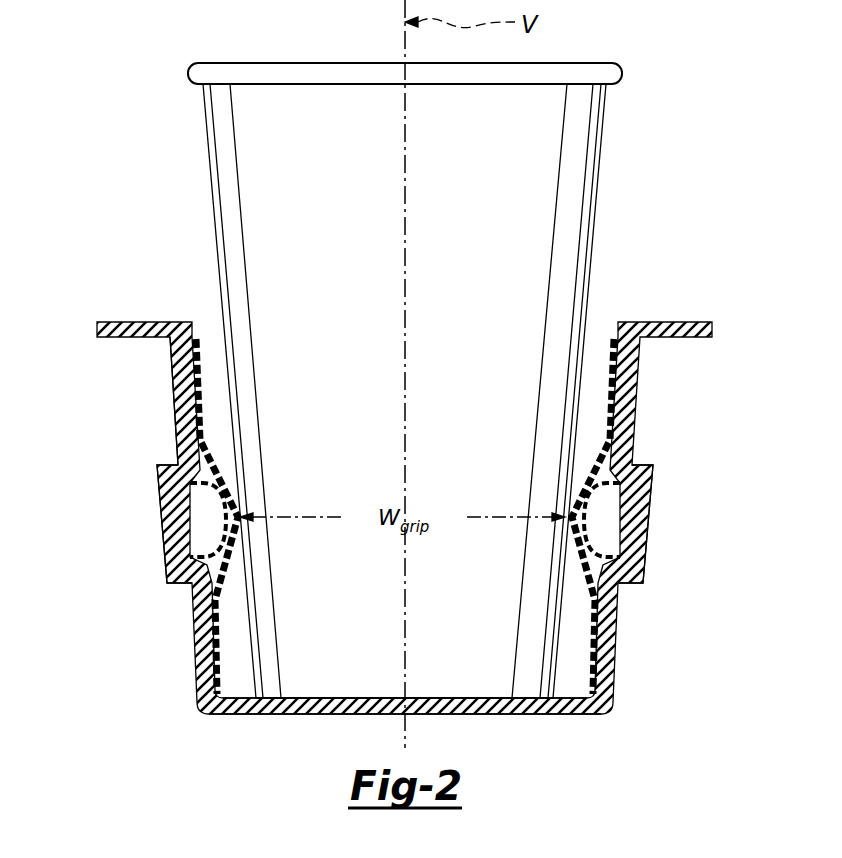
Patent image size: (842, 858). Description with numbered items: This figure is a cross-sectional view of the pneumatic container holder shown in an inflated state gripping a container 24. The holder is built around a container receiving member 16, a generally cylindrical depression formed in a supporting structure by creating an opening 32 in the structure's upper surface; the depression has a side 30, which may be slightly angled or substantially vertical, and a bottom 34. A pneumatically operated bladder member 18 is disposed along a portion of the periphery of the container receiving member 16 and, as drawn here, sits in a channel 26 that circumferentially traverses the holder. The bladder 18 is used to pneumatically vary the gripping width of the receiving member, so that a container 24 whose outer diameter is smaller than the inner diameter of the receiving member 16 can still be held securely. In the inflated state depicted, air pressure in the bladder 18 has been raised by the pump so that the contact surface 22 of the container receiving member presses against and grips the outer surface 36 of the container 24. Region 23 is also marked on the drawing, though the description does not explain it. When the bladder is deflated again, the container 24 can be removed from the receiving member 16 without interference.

The container receiving member 16 is at (203, 716).
The bladder member 18 is at (203, 543).
The contact surface 22 is at (197, 377).
The holder side wall 23 is at (176, 410).
The container 24 is at (398, 423).
The channel 26 is at (156, 490).
The side walls 30 is at (407, 549).
The opening 32 is at (597, 347).
The bottom 34 is at (543, 714).
The outer surface 36 is at (210, 178).